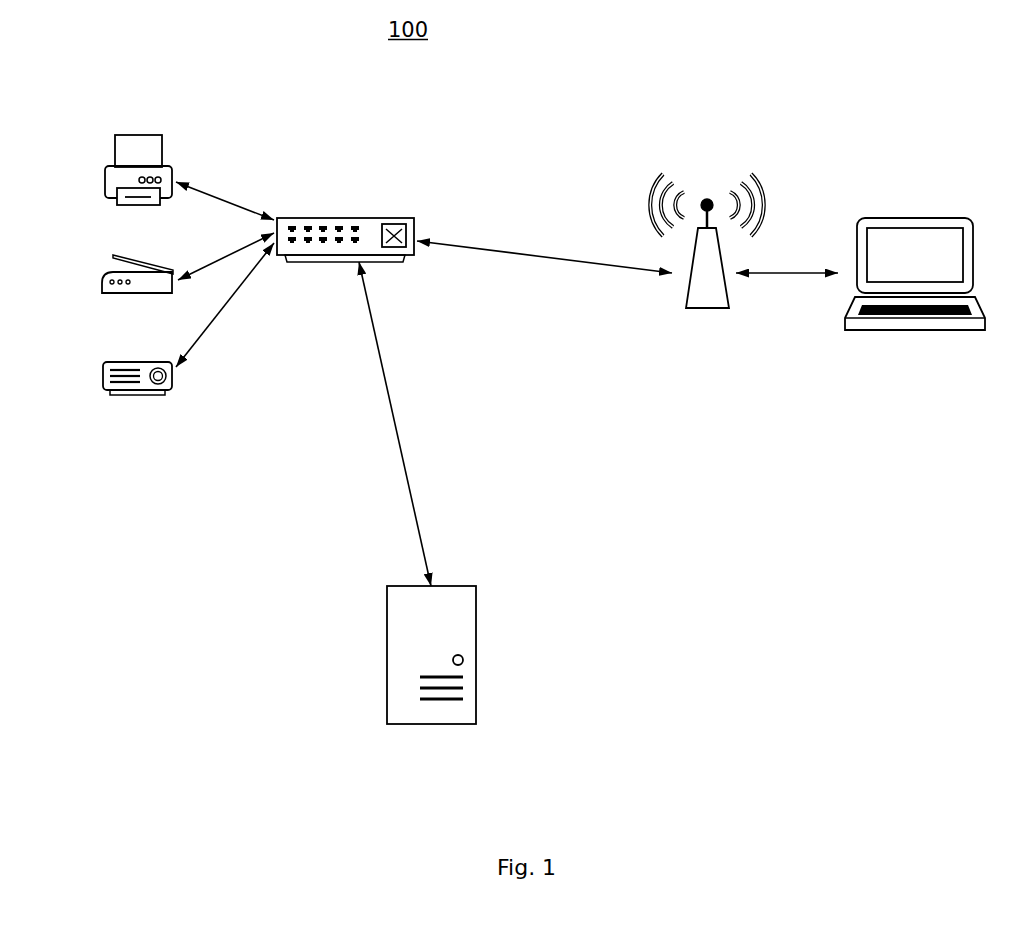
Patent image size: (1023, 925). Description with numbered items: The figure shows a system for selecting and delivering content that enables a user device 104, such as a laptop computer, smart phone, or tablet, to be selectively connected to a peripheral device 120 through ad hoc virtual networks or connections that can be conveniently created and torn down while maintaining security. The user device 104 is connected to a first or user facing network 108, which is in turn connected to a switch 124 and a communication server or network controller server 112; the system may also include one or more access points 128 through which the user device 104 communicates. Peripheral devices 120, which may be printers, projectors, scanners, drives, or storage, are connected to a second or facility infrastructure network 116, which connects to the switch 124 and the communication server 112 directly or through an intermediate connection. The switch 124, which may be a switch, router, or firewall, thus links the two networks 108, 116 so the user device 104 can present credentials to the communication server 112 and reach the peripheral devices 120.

The user device 104 is at (913, 217).
The first or user facing network 108 is at (586, 346).
The communication server or network controller server 112 is at (477, 628).
The second or facility infrastructure network 116 is at (215, 168).
The peripheral device 120 is at (140, 406).
The switch 124 is at (327, 220).
The access point 128 is at (707, 199).